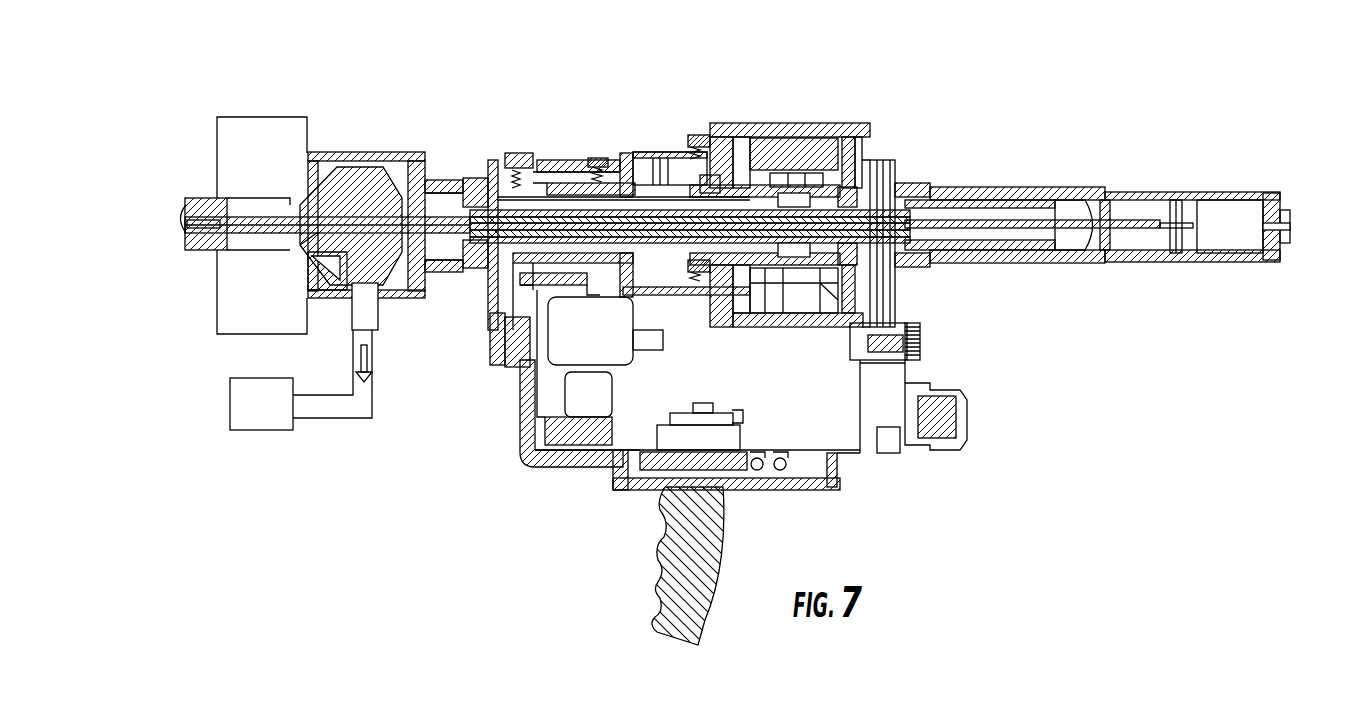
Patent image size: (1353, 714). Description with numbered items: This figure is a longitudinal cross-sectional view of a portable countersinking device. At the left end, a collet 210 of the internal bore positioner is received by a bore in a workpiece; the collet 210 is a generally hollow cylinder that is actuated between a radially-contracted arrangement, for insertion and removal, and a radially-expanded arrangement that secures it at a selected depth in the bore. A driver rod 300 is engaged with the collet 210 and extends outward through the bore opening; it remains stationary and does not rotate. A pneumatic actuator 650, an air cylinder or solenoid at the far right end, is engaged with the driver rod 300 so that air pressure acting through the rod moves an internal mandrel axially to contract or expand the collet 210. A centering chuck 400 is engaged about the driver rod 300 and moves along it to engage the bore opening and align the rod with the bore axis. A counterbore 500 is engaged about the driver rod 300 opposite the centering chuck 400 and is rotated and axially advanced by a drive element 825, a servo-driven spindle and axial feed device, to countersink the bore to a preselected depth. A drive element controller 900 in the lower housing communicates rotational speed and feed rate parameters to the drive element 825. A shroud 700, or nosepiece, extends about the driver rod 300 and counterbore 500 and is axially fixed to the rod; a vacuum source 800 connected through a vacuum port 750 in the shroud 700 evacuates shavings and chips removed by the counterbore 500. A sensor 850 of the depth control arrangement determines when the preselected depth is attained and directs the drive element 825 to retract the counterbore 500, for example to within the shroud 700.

The collet 210 is at (177, 222).
The driver rod 300 is at (207, 210).
The centering chuck 400 is at (300, 243).
The counterbore 500 is at (353, 186).
The pneumatic actuator 650 is at (1230, 235).
The shroud 700 is at (300, 153).
The vacuum port 750 is at (372, 305).
The vacuum source 800 is at (245, 416).
The drive element 825 is at (800, 152).
The sensor 850 is at (600, 152).
The drive element controller 900 is at (556, 429).